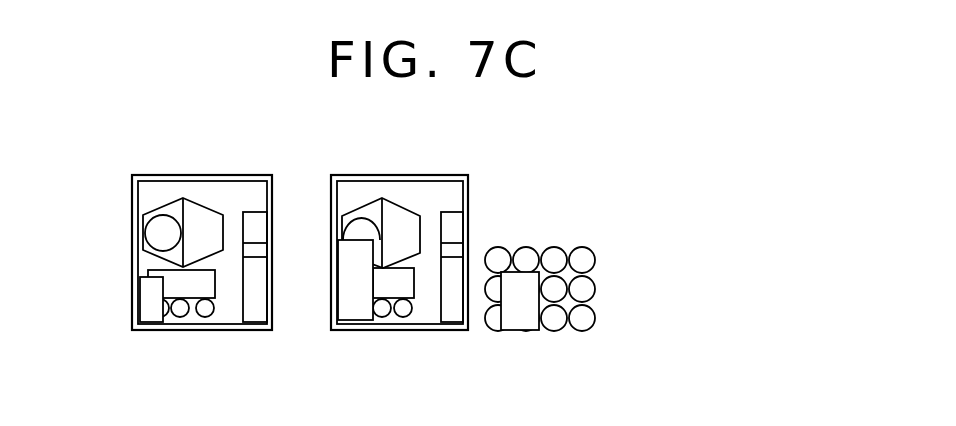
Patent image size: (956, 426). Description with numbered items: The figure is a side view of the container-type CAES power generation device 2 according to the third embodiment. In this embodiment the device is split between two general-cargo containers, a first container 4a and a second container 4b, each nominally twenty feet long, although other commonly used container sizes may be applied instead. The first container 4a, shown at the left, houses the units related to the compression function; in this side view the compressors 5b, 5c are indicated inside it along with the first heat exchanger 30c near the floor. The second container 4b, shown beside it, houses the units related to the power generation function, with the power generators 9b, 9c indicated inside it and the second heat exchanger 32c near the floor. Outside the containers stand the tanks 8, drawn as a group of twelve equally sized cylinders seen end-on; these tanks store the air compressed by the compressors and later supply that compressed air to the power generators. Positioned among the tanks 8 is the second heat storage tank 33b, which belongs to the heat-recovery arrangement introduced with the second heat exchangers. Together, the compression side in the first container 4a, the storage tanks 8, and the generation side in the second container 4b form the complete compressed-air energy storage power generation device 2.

The container-type CAES power generation device 2 is at (512, 206).
The first container 4a is at (265, 331).
The second container 4b is at (468, 331).
The compressor 5b is at (145, 189).
The compressor 5c is at (221, 196).
The power generator 9b is at (350, 189).
The power generator 9c is at (419, 196).
The first heat exchanger 30c is at (181, 292).
The second heat exchanger 32c is at (390, 309).
The tank 8 is at (596, 275).
The second heat storage tank 33b is at (541, 329).